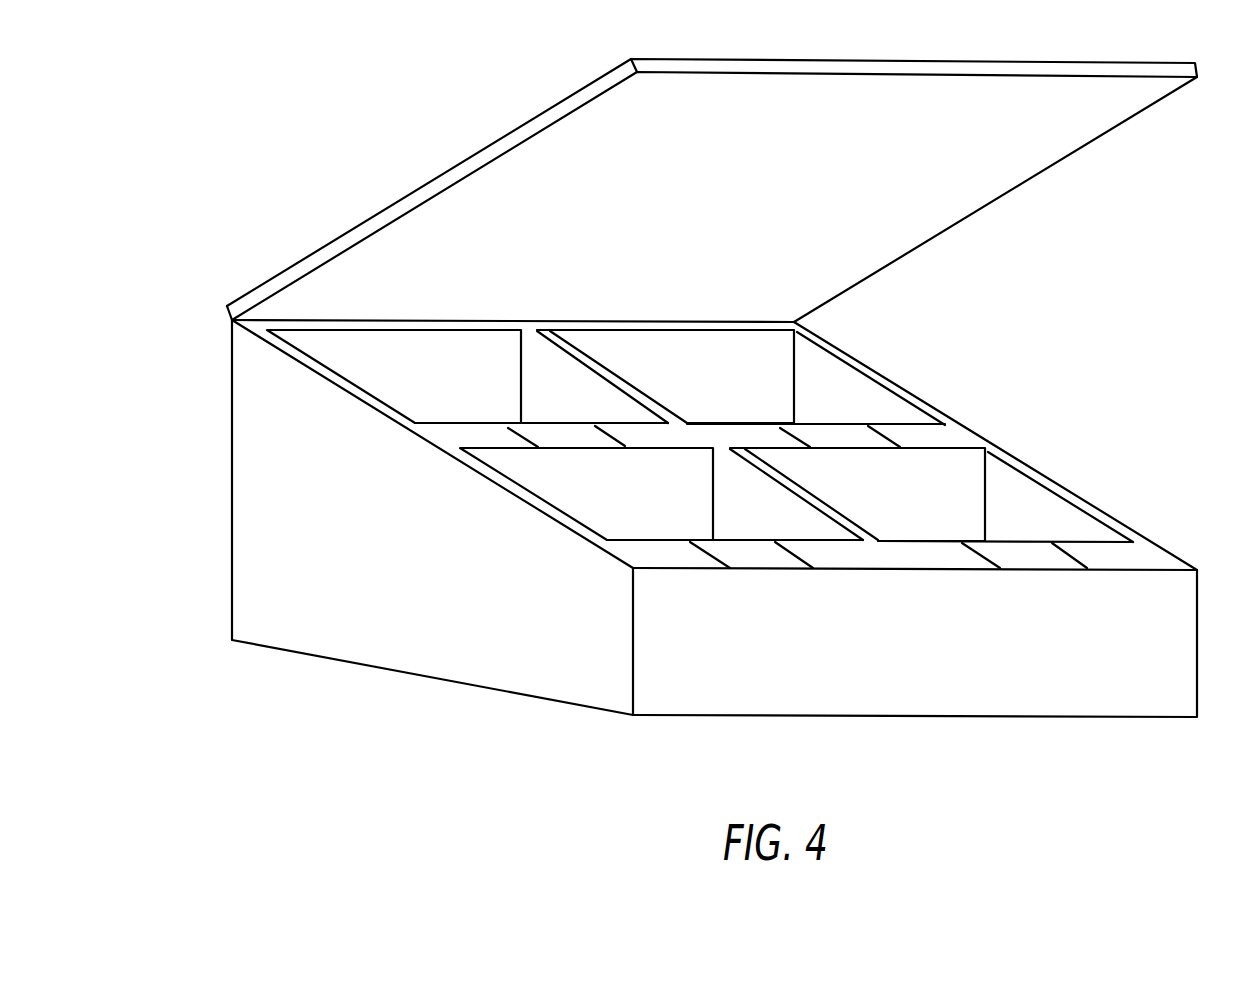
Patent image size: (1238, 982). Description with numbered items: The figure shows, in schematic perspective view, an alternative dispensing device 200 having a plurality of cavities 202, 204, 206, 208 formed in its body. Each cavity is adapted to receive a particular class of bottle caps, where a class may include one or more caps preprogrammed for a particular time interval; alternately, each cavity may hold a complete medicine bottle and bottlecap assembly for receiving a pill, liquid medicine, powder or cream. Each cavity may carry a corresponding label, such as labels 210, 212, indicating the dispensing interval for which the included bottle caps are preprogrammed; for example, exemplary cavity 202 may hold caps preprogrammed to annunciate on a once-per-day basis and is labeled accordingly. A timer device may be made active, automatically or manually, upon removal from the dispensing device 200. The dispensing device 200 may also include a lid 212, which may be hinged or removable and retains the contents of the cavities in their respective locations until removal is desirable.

The dispensing device 200 is at (297, 126).
The cavity 202 is at (357, 358).
The cavity 204 is at (603, 515).
The cavity 206 is at (858, 395).
The cavity 208 is at (1047, 513).
The label 210 is at (562, 435).
The lid 212 is at (452, 167).